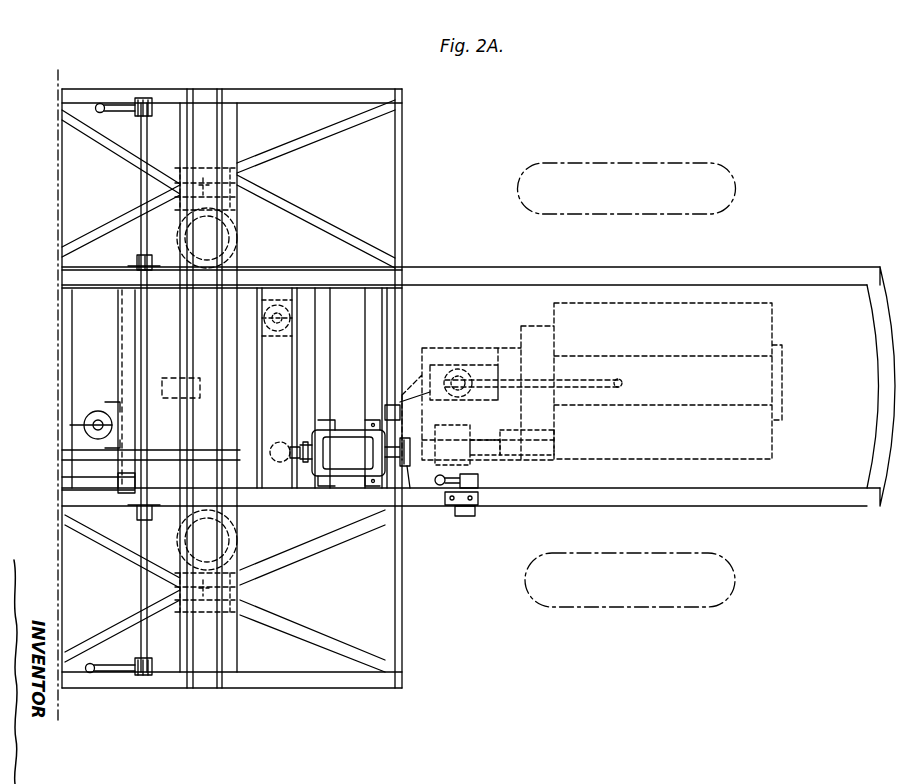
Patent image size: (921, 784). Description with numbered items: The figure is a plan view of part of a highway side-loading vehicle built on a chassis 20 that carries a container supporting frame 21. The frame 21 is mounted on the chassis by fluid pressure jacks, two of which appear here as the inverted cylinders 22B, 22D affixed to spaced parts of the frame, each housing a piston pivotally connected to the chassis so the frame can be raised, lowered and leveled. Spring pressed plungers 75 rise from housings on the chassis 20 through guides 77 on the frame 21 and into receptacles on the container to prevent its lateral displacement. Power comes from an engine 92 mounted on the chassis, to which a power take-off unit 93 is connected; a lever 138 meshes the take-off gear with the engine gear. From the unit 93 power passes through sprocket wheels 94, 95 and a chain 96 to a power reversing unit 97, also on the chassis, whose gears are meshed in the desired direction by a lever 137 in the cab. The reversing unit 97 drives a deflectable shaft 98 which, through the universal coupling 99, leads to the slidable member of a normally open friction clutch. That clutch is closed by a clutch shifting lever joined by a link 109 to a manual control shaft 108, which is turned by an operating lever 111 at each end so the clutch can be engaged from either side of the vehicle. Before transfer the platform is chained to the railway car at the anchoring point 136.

The chassis 20 is at (462, 267).
The container supporting frame 21 is at (111, 276).
The inverted cylinder 22B is at (215, 543).
The inverted cylinder 22D is at (215, 243).
The spring pressed plunger 75 is at (98, 419).
The guide 77 is at (72, 425).
The engine 92 is at (780, 436).
The power take-off unit 93 is at (470, 460).
The sprocket wheel 94 is at (385, 410).
The sprocket wheel 95 is at (410, 490).
The chain 96 is at (410, 462).
The power reversing unit 97 is at (342, 453).
The deflectable shaft 98 is at (62, 443).
The universal coupling 99 is at (281, 438).
The manual control shaft 108 is at (142, 596).
The link 109 is at (62, 478).
The operating lever 111 is at (103, 100).
The anchoring point 136 is at (228, 196).
The lever 137 is at (445, 492).
The lever 138 is at (556, 447).